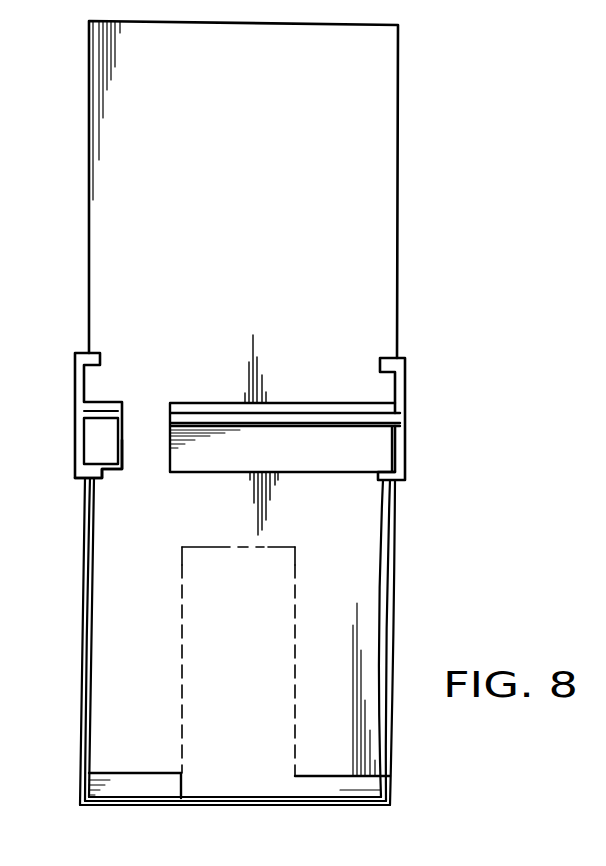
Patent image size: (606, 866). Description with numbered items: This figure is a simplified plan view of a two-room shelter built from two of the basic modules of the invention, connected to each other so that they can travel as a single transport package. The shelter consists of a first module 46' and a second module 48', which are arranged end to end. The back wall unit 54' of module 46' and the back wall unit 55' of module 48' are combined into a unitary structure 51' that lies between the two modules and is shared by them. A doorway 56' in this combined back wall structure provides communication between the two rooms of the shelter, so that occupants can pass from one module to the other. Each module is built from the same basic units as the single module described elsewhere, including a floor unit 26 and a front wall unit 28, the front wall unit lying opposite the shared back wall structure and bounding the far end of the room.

The module 48' is at (213, 189).
The back wall unit 55' is at (70, 411).
The back wall unit 54' is at (68, 448).
The doorway 56' is at (119, 474).
The unitary structure 51' is at (316, 435).
The module 46' is at (212, 641).
The floor unit 26 is at (108, 741).
The front wall unit 28 is at (327, 798).